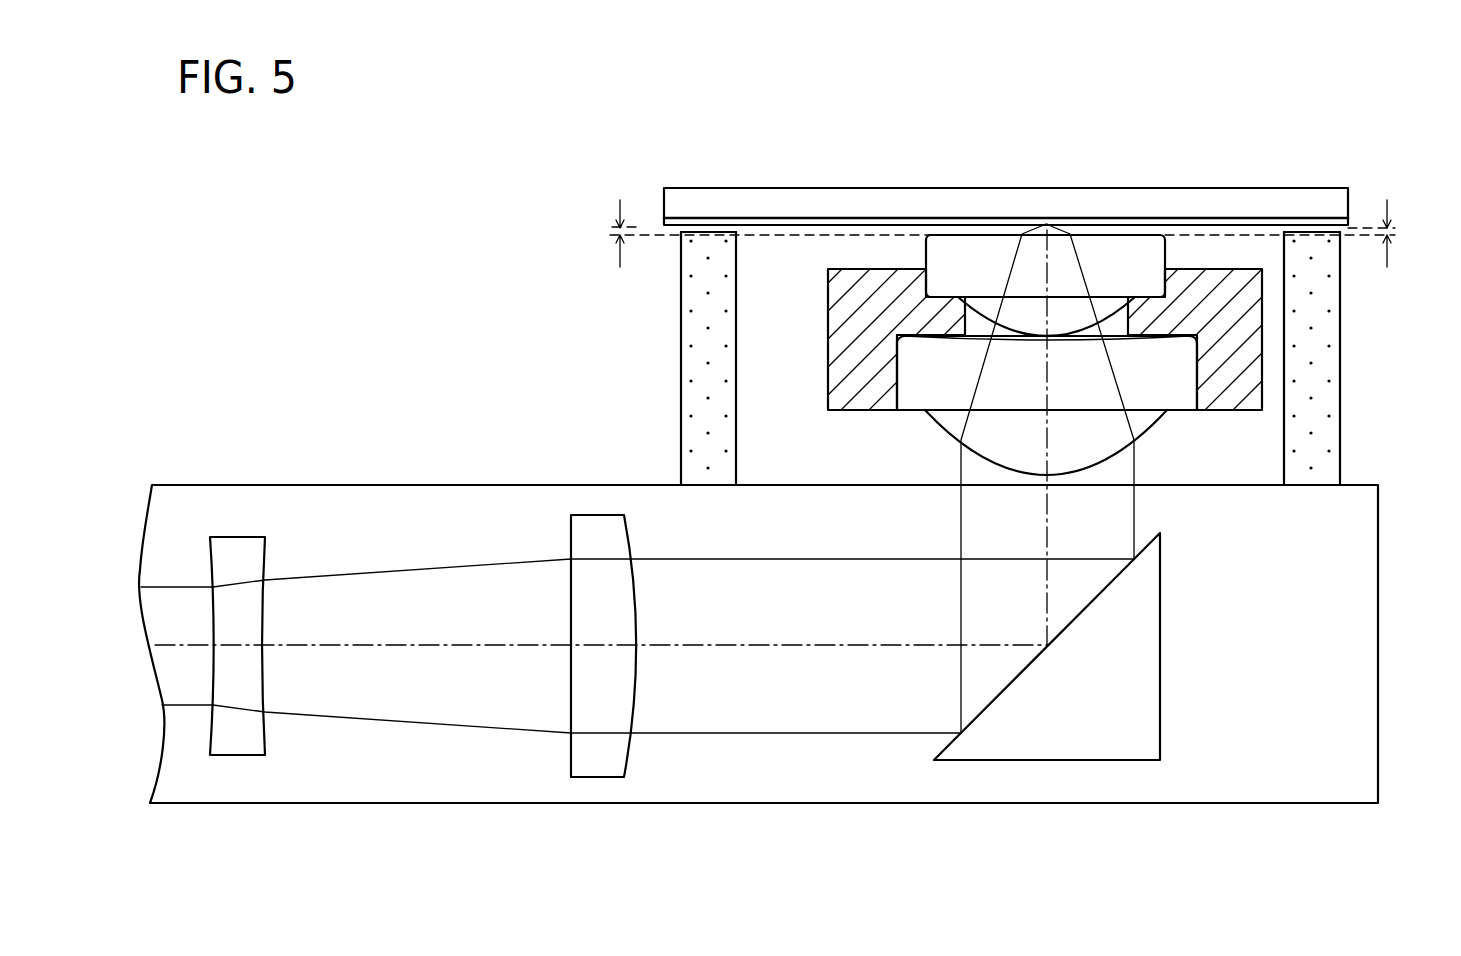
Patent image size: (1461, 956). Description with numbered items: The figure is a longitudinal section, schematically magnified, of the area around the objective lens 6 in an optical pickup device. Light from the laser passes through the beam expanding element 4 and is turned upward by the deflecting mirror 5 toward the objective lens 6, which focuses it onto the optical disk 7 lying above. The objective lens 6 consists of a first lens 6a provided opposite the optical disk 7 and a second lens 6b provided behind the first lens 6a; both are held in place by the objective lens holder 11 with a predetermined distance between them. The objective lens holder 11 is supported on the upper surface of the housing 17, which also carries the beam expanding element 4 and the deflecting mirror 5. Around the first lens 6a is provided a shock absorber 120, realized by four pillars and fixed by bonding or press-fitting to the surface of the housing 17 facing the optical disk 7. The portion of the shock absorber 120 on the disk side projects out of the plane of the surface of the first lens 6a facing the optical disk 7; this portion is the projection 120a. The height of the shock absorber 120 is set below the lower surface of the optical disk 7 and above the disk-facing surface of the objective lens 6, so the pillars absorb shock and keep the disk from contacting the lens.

The beam expanding element 4 is at (208, 503).
The deflecting mirror 5 is at (1066, 733).
The objective lens 6 is at (1046, 287).
The first lens 6a is at (977, 250).
The second lens 6b is at (918, 362).
The optical disk 7 is at (1132, 203).
The objective lens holder 11 is at (845, 348).
The housing 17 is at (1258, 790).
The shock absorber 120 is at (690, 315).
The projection 120a is at (710, 238).